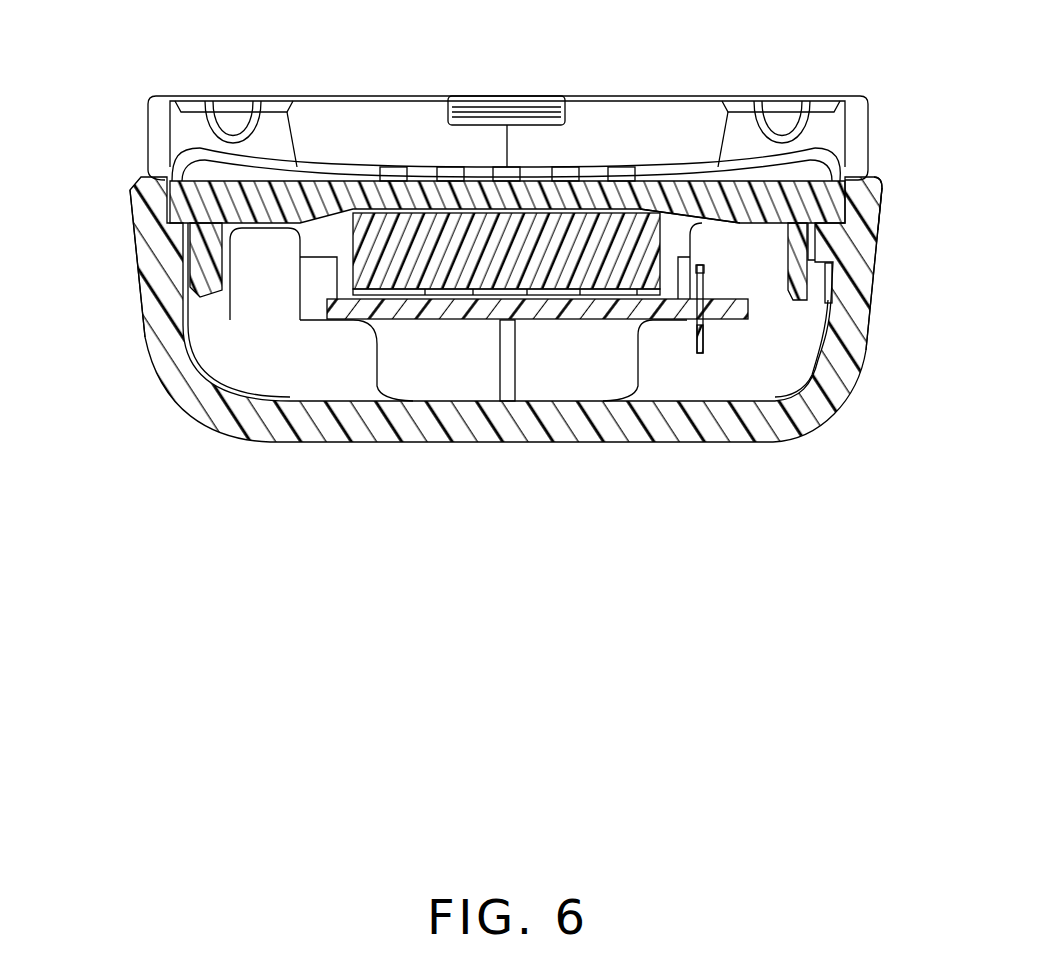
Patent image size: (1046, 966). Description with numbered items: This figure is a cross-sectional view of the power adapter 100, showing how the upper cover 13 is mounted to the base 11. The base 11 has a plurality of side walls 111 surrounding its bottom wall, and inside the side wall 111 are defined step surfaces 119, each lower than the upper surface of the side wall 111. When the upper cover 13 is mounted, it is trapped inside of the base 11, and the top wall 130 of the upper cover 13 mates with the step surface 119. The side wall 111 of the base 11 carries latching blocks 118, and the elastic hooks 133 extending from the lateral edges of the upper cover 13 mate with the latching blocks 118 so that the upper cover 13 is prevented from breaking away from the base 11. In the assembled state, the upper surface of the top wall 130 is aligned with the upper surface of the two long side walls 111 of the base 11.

The power adapter 100 is at (425, 70).
The base 11 is at (703, 420).
The side wall 111 is at (137, 232).
The latching block 118 is at (820, 260).
The step surface 119 is at (880, 205).
The upper cover 13 is at (590, 197).
The top wall 130 is at (667, 197).
The elastic hook 133 is at (853, 380).